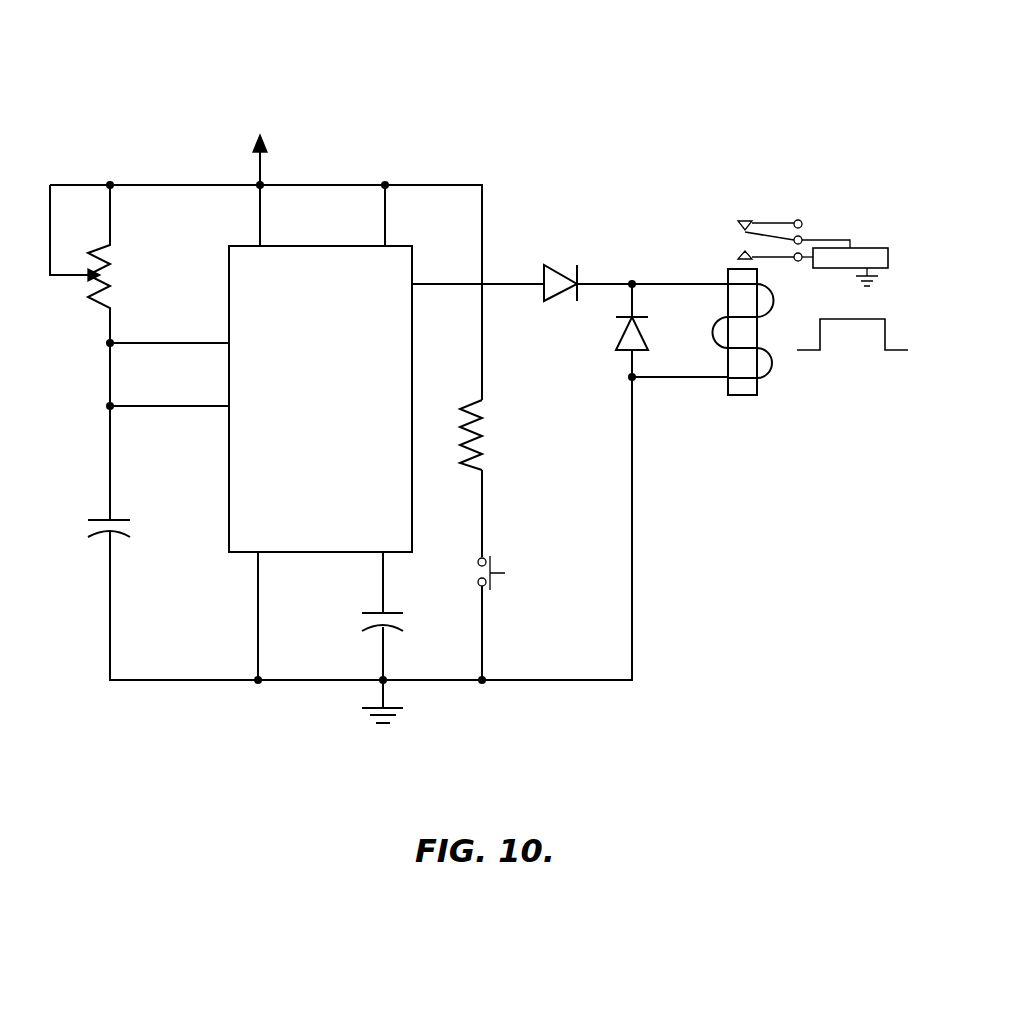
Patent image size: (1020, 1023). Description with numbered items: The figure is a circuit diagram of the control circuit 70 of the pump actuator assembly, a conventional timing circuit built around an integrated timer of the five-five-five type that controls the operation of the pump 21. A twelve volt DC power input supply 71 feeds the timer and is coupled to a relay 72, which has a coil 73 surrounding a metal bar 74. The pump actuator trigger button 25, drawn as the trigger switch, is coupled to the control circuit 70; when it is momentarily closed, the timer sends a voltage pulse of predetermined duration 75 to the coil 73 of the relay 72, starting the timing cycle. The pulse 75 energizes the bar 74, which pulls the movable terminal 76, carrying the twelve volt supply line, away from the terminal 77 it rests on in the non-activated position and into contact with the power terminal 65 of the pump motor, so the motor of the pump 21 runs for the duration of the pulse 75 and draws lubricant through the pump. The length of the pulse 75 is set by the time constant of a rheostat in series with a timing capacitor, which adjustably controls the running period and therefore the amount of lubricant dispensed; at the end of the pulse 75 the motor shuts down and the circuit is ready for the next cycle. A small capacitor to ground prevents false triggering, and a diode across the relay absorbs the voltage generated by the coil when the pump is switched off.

The control circuit 70 is at (260, 743).
The 12VDC power input supply 71 is at (248, 150).
The relay 72 is at (753, 344).
The coil 73 is at (775, 373).
The metal bar 74 is at (740, 390).
The voltage pulse of predetermined duration 75 is at (880, 335).
The movable terminal 76 is at (755, 241).
The terminal 77 is at (768, 222).
The 12VDC power terminal 65 is at (735, 262).
The pump 21 is at (852, 250).
The pump actuator trigger button 25 is at (492, 588).